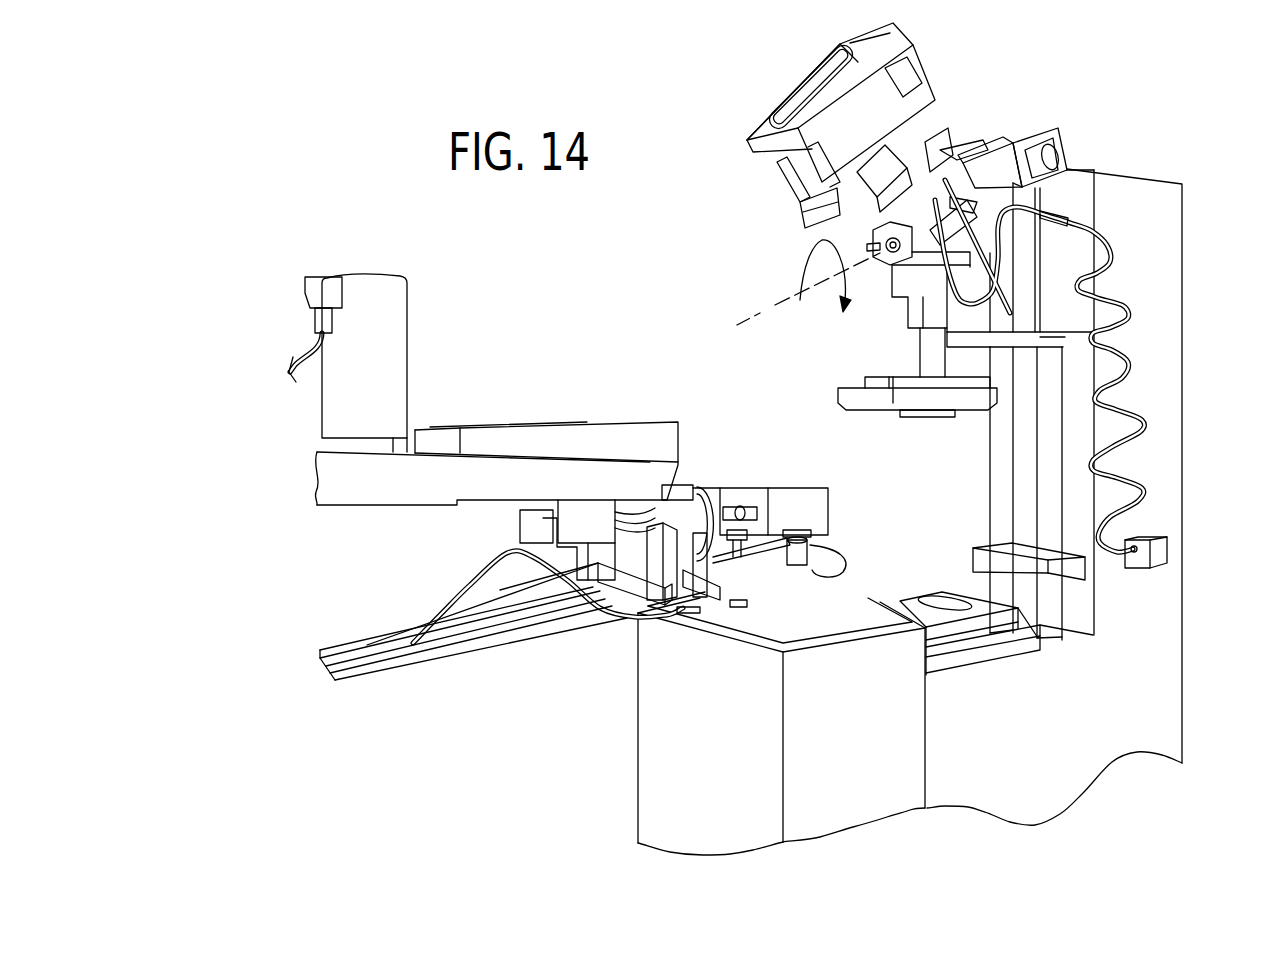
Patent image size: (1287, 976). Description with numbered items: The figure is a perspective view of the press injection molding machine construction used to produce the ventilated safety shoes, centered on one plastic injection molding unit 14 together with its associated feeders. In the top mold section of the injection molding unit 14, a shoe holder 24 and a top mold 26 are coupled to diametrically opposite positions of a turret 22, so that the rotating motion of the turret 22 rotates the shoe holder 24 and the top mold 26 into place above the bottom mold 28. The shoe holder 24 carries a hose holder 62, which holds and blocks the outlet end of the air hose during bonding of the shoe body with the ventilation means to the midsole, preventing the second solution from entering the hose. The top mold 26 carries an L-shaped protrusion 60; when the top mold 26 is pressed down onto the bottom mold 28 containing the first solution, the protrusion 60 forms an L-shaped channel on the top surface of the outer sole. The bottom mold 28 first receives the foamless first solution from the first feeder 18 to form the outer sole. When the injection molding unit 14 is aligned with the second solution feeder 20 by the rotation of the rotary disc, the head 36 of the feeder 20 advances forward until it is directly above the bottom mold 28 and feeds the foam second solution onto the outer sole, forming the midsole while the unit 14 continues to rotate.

The plastic injection molding unit 14 is at (1192, 228).
The first solution feeder 18 is at (468, 432).
The second solution feeder 20 is at (546, 461).
The turret 22 is at (878, 255).
The shoe holder 24 is at (845, 124).
The top mold 26 is at (958, 397).
The bottom mold 28 is at (982, 623).
The head 36 is at (798, 500).
The L-shaped protrusion 60 is at (948, 418).
The hose holder 62 is at (818, 118).